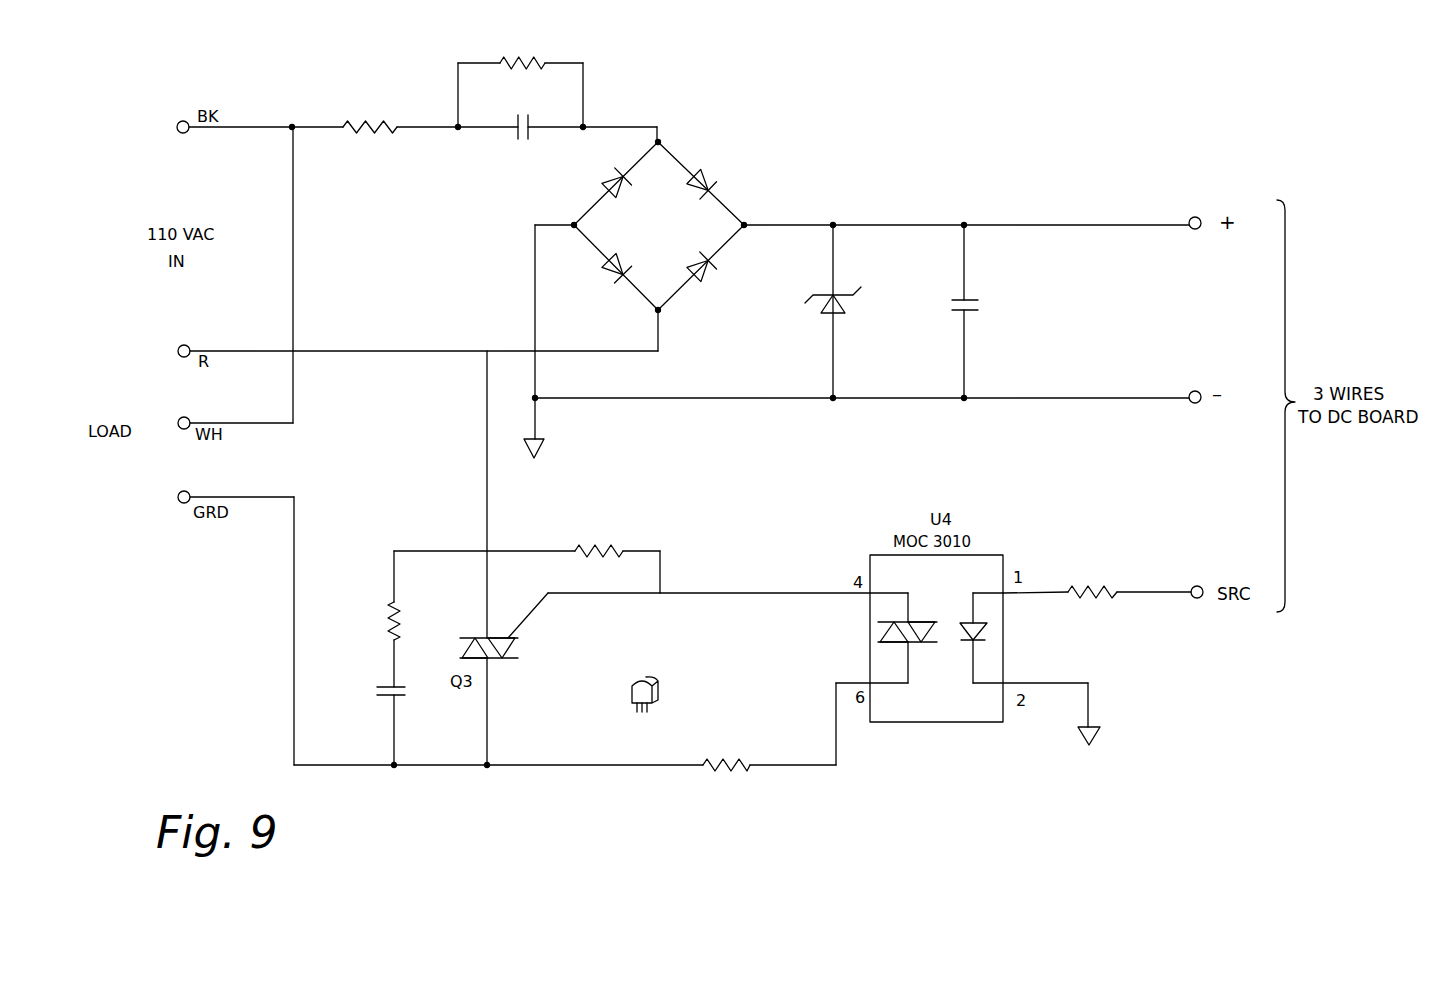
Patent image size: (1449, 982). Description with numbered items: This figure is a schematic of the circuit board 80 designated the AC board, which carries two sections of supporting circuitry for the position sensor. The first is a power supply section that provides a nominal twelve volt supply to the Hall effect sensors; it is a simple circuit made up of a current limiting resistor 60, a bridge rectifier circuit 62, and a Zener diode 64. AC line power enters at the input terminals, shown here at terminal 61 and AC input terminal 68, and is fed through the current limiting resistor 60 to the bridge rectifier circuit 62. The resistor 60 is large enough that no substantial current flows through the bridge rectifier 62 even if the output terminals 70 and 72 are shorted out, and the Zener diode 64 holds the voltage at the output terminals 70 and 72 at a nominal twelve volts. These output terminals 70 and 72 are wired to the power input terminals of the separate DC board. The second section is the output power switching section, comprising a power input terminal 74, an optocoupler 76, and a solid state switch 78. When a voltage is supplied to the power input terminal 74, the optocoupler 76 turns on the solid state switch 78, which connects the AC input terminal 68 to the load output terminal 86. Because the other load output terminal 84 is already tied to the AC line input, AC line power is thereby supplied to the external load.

The current limiting resistor 60 is at (377, 112).
The black AC input terminal 61 is at (187, 136).
The bridge rectifier circuit 62 is at (730, 198).
The Zener diode 64 is at (849, 310).
The AC input terminal 68 is at (182, 342).
The output terminal 70 is at (1210, 212).
The output terminal 72 is at (1199, 407).
The power input terminal 74 is at (1199, 601).
The optocoupler 76 is at (958, 727).
The solid state switch 78 is at (518, 665).
The circuit board 80 is at (1048, 108).
The load output terminal 84 is at (180, 430).
The load output terminal 86 is at (177, 498).